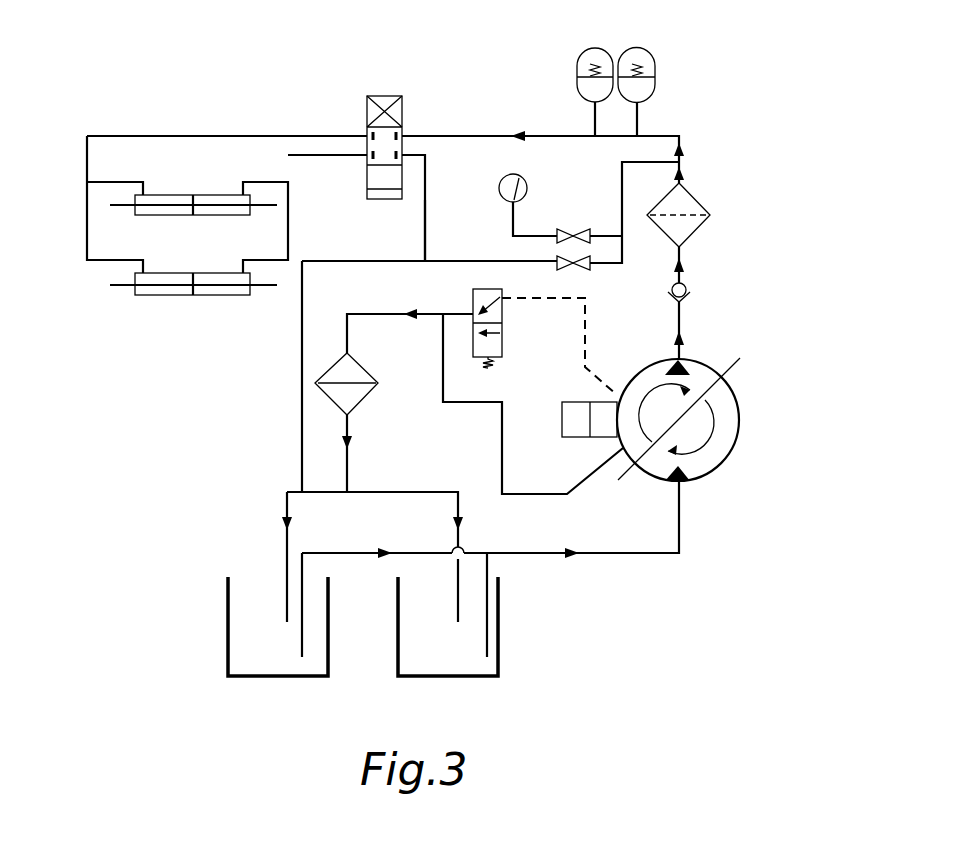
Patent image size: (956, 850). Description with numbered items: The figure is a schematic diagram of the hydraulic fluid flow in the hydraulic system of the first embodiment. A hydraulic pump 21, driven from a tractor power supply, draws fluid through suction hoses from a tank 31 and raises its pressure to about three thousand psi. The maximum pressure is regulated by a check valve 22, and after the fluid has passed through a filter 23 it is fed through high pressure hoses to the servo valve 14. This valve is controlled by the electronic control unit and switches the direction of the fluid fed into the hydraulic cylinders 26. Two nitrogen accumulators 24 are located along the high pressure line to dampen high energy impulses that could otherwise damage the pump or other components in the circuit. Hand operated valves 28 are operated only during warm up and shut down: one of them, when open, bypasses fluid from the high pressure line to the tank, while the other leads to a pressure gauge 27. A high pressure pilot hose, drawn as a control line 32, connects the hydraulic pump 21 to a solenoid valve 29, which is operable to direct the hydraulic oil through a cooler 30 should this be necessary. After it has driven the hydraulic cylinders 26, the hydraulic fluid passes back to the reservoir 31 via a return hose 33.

The servo valve 14 is at (401, 98).
The hydraulic pump 21 is at (722, 407).
The check valve 22 is at (690, 298).
The filter 23 is at (690, 201).
The nitrogen accumulators 24 is at (636, 48).
The hydraulic cylinders 26 is at (155, 217).
The pressure gauge 27 is at (500, 183).
The hand operated valves 28 is at (566, 266).
The solenoid valve 29 is at (502, 346).
The cooler 30 is at (315, 379).
The tank 31 is at (275, 678).
The control line 32 is at (588, 323).
The return hose 33 is at (425, 233).